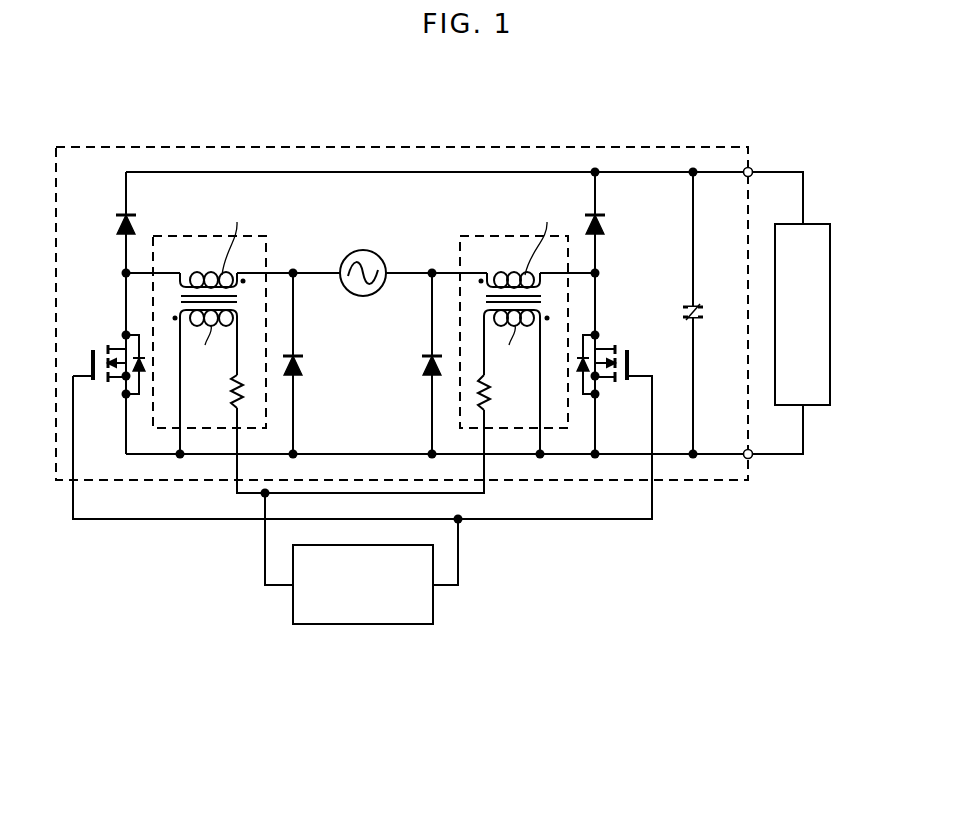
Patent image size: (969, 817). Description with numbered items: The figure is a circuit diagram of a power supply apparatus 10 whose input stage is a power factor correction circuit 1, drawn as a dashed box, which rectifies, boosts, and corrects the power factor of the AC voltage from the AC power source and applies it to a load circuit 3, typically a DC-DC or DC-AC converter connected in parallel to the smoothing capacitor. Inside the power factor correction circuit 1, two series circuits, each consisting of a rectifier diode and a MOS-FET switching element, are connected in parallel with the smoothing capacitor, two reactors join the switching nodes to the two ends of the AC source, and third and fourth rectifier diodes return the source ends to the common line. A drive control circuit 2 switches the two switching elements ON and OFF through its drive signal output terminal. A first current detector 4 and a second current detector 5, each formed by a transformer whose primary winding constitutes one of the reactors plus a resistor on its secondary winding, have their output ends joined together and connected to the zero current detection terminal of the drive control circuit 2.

The power supply apparatus 10 is at (86, 106).
The power factor correction circuit 1 is at (193, 145).
The drive control circuit 2 is at (365, 625).
The load circuit 3 is at (830, 224).
The first current detector 4 is at (512, 430).
The second current detector 5 is at (207, 430).